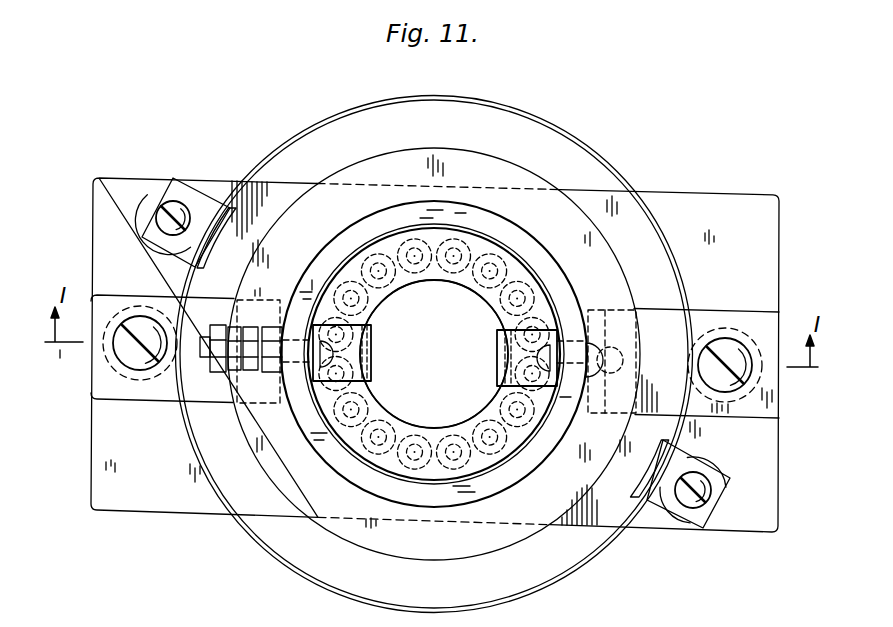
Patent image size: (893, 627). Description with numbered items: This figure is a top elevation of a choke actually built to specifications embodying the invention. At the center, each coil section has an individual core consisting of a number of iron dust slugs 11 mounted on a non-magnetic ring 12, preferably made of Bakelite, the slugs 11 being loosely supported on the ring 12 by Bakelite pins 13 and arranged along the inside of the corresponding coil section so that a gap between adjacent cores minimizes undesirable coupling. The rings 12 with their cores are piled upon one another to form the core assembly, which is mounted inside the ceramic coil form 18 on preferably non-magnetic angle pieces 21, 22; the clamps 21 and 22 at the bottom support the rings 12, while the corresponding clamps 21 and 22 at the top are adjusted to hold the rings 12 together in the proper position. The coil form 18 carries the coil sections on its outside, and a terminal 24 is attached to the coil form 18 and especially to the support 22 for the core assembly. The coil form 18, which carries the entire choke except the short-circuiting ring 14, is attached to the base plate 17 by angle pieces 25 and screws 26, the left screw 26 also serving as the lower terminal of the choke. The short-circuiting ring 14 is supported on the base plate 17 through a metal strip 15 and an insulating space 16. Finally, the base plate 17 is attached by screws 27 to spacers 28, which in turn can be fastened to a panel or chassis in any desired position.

The iron dust slugs 11 is at (490, 297).
The non-magnetic ring 12 is at (487, 407).
The Bakelite pins 13 is at (394, 303).
The short-circuiting ring 14 is at (278, 562).
The metal strip 15 is at (229, 207).
The insulating space 16 is at (143, 190).
The base plate 17 is at (705, 195).
The ceramic coil form 18 is at (530, 238).
The angle piece 21 is at (372, 347).
The angle piece 22 is at (497, 345).
The terminal 24 is at (192, 296).
The angle pieces 25 is at (100, 399).
The screws 26 is at (620, 352).
The screws 27 is at (122, 362).
The spacers 28 is at (138, 383).